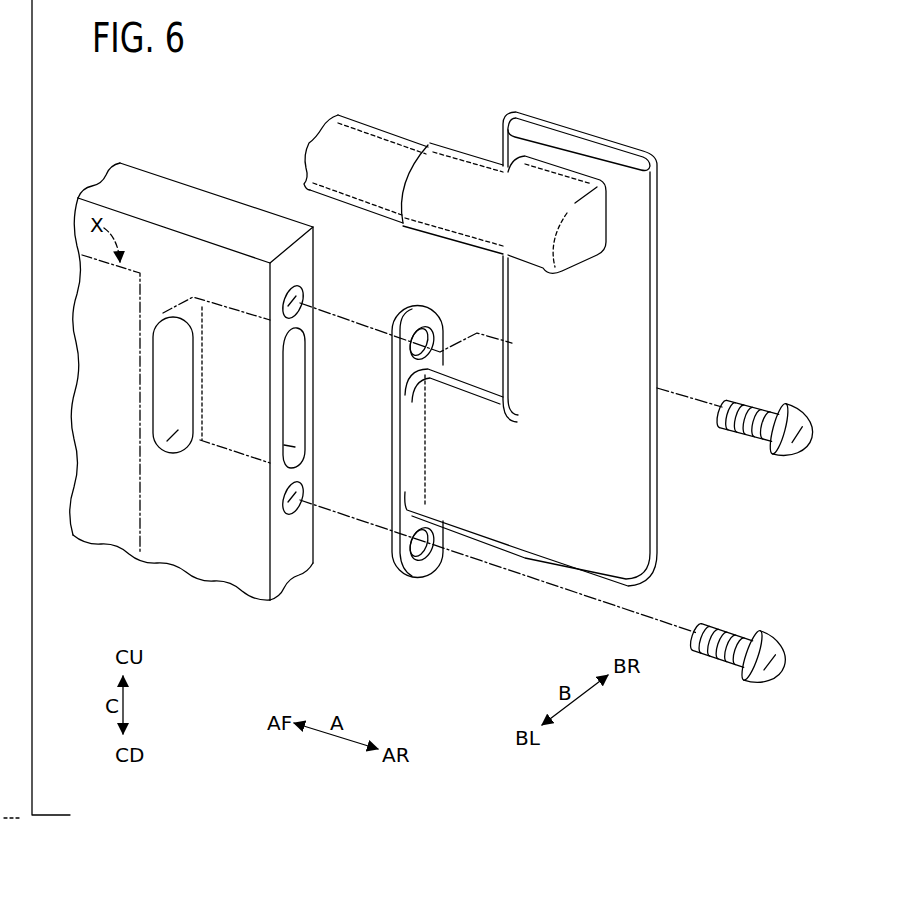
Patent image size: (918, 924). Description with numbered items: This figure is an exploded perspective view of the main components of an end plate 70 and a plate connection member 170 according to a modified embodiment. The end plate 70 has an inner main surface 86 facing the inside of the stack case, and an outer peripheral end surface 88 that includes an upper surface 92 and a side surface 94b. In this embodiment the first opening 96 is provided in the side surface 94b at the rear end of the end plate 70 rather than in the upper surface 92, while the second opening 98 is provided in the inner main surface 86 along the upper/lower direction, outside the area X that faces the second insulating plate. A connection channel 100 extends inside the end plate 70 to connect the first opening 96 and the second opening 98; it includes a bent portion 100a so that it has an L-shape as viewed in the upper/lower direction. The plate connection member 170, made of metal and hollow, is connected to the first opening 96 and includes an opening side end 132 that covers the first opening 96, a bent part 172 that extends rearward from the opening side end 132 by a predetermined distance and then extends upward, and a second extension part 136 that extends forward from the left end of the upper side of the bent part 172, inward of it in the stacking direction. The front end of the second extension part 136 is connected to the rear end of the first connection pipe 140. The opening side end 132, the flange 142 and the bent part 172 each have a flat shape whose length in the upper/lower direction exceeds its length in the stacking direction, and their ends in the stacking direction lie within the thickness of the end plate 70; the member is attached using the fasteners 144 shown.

The end plate 70 is at (210, 395).
The inner main surface 86 is at (208, 567).
The outer peripheral end surface 88 is at (214, 395).
The upper surface 92 is at (170, 192).
The side surface 94b is at (265, 441).
The first opening 96 is at (290, 398).
The second opening 98 is at (163, 393).
The connection channel 100 is at (216, 377).
The bent portion 100a is at (193, 296).
The opening side end 132 is at (387, 475).
The second extension part 136 is at (460, 173).
The first connection pipe 140 is at (371, 140).
The flange 142 is at (420, 568).
The screws 144 is at (793, 420).
The plate connection member 170 is at (542, 352).
The bent part 172 is at (625, 546).